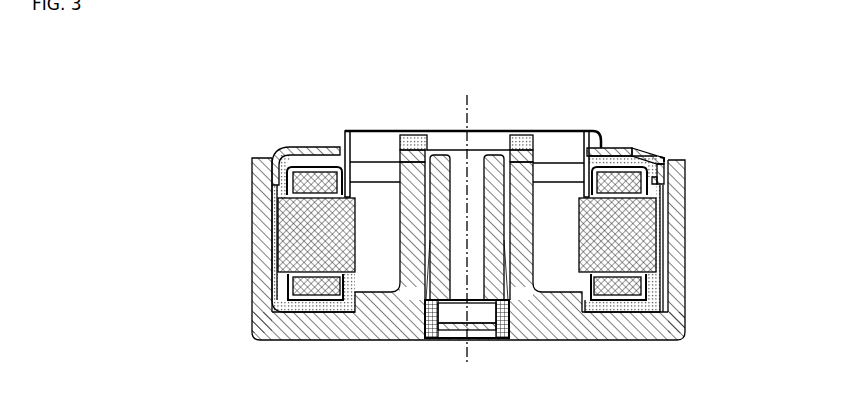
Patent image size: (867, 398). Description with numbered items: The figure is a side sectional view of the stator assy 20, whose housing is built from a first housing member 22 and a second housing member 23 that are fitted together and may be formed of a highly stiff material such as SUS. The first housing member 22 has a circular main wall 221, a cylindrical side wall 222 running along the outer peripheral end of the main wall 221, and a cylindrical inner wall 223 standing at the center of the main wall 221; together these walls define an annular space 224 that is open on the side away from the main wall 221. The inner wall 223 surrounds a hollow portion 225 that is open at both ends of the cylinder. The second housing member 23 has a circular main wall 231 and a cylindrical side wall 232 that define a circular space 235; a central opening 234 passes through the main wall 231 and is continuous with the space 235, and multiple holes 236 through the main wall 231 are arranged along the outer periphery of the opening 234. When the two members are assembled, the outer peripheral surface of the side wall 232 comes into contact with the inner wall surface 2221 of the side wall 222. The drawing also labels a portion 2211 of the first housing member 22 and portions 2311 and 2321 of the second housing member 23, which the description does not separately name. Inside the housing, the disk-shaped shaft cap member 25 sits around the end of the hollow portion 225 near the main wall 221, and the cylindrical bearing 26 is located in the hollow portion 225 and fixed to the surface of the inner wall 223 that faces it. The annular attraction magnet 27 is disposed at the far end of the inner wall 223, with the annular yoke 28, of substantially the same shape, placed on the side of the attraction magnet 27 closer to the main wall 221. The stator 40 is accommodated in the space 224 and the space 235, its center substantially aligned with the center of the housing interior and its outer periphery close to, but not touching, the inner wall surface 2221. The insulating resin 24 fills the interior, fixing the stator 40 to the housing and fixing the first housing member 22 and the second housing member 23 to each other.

The stator assy 20 is at (728, 50).
The first housing member 22 is at (702, 349).
The main wall 221 is at (615, 325).
The base top surface 2211 is at (641, 316).
The side wall 222 is at (677, 258).
The inner wall surface 2221 is at (669, 283).
The inner wall 223 is at (518, 262).
The space 224 is at (659, 298).
The hollow portion 225 is at (473, 153).
The second housing member 23 is at (689, 91).
The main wall 231 is at (633, 130).
The inclined portion 2311 is at (647, 150).
The side wall 232 is at (665, 161).
The cover flange 2321 is at (663, 178).
The opening 234 is at (561, 149).
The space 235 is at (665, 156).
The holes 236 is at (626, 148).
The insulating resin 24 is at (275, 298).
The shaft cap member 25 is at (500, 318).
The bearing 26 is at (432, 262).
The attraction magnet 27 is at (414, 140).
The yoke 28 is at (406, 156).
The stator 40 is at (284, 237).